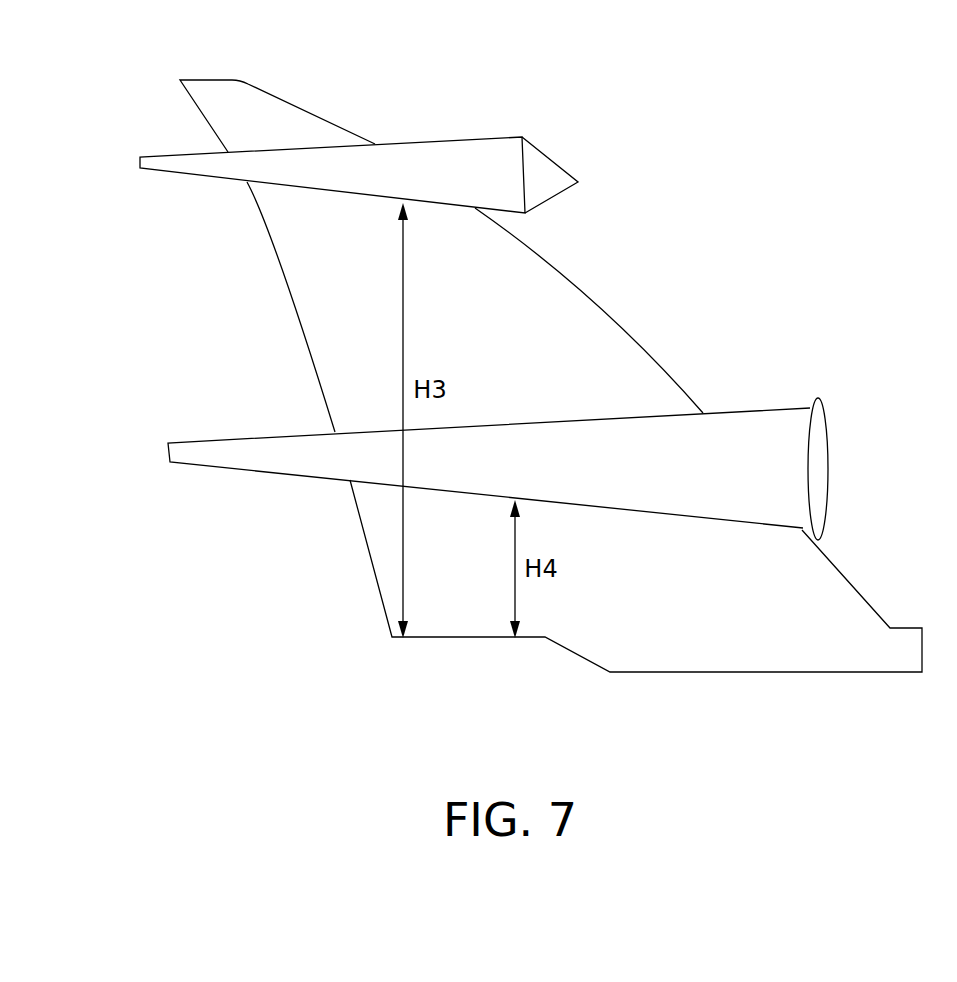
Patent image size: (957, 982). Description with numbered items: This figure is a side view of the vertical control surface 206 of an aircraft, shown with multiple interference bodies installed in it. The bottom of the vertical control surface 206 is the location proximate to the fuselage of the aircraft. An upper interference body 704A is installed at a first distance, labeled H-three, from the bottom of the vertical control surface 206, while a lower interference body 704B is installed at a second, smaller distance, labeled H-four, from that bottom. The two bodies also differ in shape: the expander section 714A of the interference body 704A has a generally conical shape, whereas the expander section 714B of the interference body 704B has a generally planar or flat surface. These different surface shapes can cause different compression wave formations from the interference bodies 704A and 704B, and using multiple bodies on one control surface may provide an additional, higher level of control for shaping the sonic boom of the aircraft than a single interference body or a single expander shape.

The vertical control surface 206 is at (248, 84).
The interference body 704A is at (437, 139).
The expander section 714A is at (582, 156).
The interference body 704B is at (715, 413).
The expander section 714B is at (834, 388).